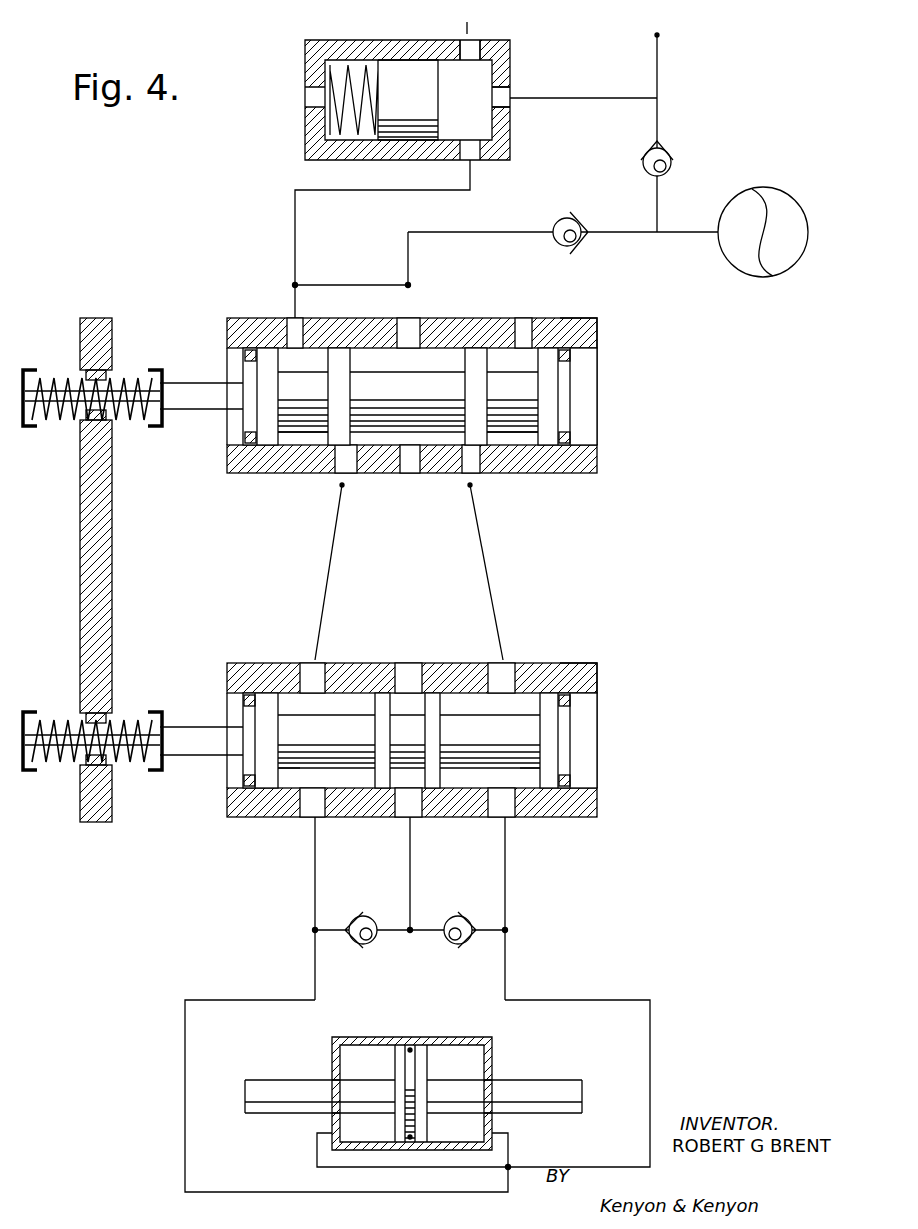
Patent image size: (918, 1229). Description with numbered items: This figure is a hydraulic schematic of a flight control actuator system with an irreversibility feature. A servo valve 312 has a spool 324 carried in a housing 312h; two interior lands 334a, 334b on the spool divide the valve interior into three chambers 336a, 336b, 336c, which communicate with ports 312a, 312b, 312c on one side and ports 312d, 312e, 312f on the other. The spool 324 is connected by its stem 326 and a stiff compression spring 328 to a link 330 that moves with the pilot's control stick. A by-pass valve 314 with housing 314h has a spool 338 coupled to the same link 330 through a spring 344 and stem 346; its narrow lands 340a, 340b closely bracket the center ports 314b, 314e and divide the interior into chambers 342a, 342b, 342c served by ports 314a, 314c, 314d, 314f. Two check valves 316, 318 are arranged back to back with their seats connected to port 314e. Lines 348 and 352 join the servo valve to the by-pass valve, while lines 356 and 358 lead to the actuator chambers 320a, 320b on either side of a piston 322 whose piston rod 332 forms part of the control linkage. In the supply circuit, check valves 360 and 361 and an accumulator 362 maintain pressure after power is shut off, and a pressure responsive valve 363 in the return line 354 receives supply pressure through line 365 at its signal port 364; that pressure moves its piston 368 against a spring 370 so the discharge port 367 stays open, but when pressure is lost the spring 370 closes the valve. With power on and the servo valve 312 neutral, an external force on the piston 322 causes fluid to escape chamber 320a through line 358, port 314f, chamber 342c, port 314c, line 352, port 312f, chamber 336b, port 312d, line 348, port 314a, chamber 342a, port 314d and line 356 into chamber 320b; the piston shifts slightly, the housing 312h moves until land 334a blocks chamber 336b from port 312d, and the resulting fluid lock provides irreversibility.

The servo valve 312 is at (604, 318).
The servo valve port 312a is at (289, 318).
The servo valve port 312b is at (402, 318).
The servo valve port 312c is at (518, 318).
The servo valve port 312d is at (335, 478).
The servo valve port 312e is at (405, 478).
The servo valve port 312f is at (468, 478).
The servo valve housing 312h is at (598, 330).
The by-pass valve 314 is at (604, 663).
The by-pass valve port 314a is at (305, 663).
The by-pass valve port 314b is at (400, 663).
The by-pass valve port 314c is at (492, 663).
The by-pass valve port 314d is at (300, 826).
The by-pass valve port 314e is at (404, 820).
The by-pass valve port 314f is at (497, 820).
The by-pass valve housing 314h is at (598, 677).
The check valve 316 is at (372, 906).
The check valve 318 is at (470, 905).
The actuator chamber 320a is at (372, 1052).
The actuator chamber 320b is at (456, 1046).
The piston 322 is at (421, 1150).
The servo valve spool 324 is at (598, 417).
The stem 326 is at (192, 412).
The spring 328 is at (60, 372).
The link 330 is at (113, 592).
The piston rod 332 is at (575, 1086).
The servo valve land 334a is at (304, 402).
The servo valve land 334b is at (512, 402).
The servo valve chamber 336a is at (290, 436).
The servo valve chamber 336b is at (420, 358).
The servo valve chamber 336c is at (520, 440).
The by-pass valve spool 338 is at (598, 737).
The by-pass valve land 340a is at (380, 733).
The by-pass valve land 340b is at (448, 734).
The by-pass valve chamber 342a is at (297, 780).
The by-pass valve chamber 342b is at (400, 707).
The by-pass valve chamber 342c is at (540, 785).
The spring 344 is at (128, 732).
The stem 346 is at (188, 758).
The line 348 is at (330, 592).
The line 352 is at (494, 592).
The return line 354 is at (292, 218).
The line 356 is at (246, 998).
The line 358 is at (601, 998).
The check valve 360 is at (580, 220).
The check valve 361 is at (673, 165).
The accumulator 362 is at (784, 197).
The pressure responsive valve 363 is at (528, 76).
The signal port 364 is at (512, 103).
The line 365 is at (620, 86).
The discharge port 367 is at (482, 40).
The piston 368 is at (402, 76).
The spring 370 is at (328, 120).